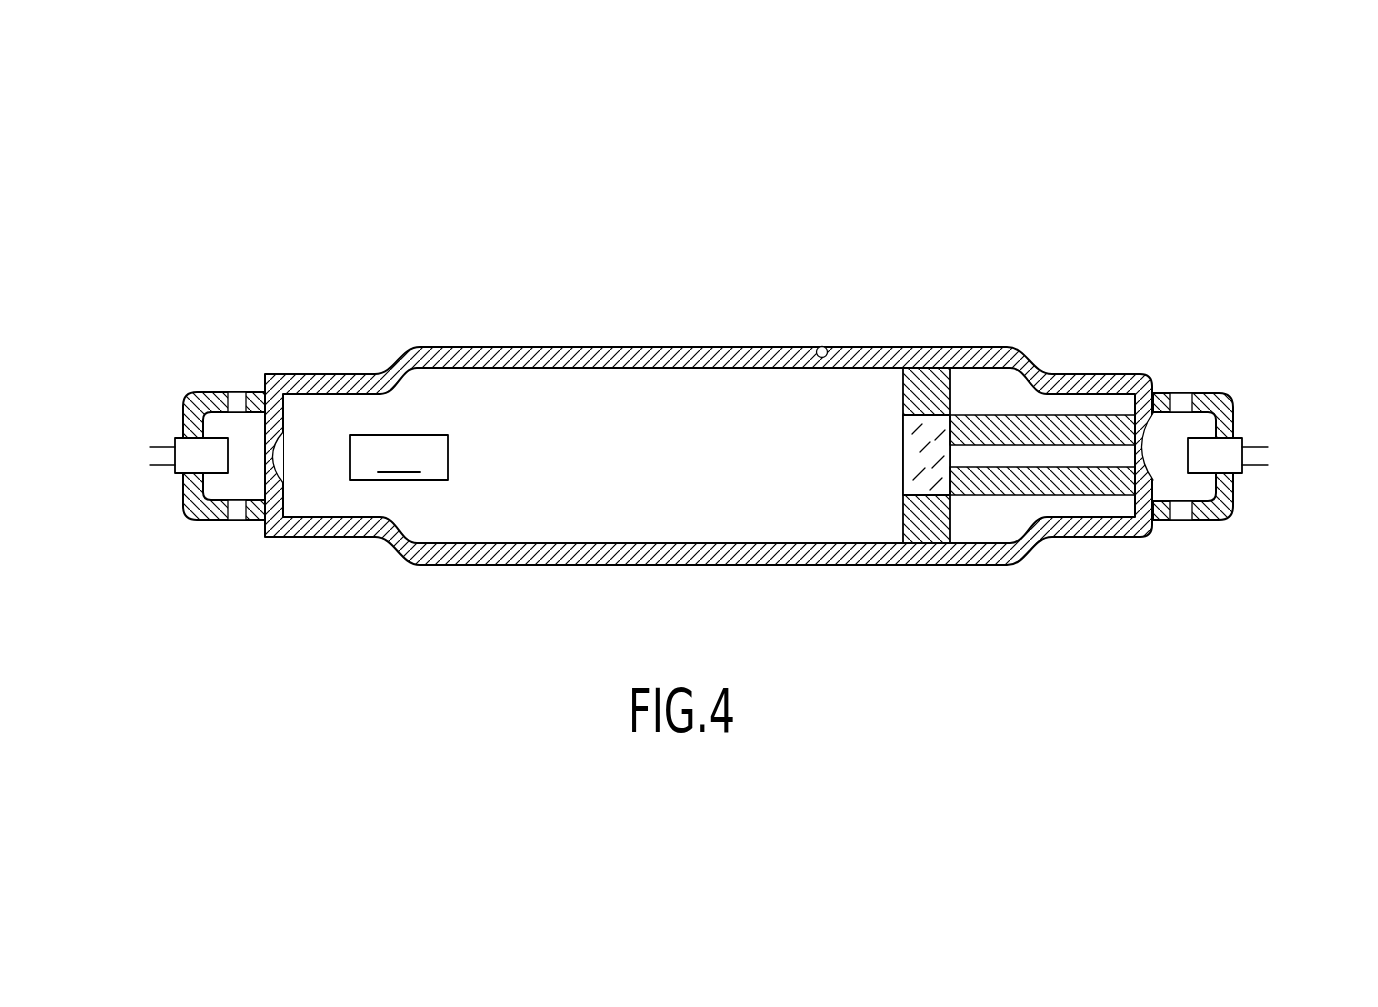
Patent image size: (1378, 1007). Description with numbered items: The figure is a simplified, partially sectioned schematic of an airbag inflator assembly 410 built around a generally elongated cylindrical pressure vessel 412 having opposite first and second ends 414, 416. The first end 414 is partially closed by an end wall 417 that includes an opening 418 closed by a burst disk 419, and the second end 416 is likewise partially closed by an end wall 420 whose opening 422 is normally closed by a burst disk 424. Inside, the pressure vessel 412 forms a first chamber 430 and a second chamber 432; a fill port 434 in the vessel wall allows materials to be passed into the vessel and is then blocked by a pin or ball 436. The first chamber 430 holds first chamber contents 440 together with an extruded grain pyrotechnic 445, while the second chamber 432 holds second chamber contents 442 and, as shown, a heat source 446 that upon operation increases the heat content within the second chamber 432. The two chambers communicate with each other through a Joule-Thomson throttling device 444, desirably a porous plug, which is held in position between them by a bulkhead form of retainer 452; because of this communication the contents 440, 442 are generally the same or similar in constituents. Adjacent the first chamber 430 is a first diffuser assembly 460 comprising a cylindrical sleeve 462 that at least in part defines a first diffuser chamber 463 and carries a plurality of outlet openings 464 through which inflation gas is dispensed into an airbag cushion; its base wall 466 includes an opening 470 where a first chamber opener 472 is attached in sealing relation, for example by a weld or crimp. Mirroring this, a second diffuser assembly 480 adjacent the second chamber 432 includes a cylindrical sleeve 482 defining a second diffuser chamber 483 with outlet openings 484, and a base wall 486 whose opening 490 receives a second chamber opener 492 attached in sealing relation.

The inflator assembly 410 is at (850, 226).
The pressure vessel 412 is at (630, 345).
The first end 414 is at (1115, 303).
The second end 416 is at (275, 348).
The end wall 417 is at (1122, 537).
The opening 418 is at (1149, 395).
The burst disk 419 is at (1150, 448).
The end wall 420 is at (272, 523).
The opening 422 is at (302, 385).
The burst disk 424 is at (283, 442).
The first chamber 430 is at (1033, 532).
The second chamber 432 is at (575, 545).
The fill port 434 is at (811, 348).
The pin or ball 436 is at (826, 348).
The first chamber contents 440 is at (988, 523).
The second chamber contents 442 is at (710, 505).
The Joule-Thomson throttling device 444 is at (925, 470).
The extruded grain pyrotechnic 445 is at (1003, 418).
The heat source 446 is at (399, 457).
The retainer 452 is at (935, 528).
The first diffuser assembly 460 is at (1260, 303).
The cylindrical sleeve 462 is at (1158, 525).
The first diffuser chamber 463 is at (1235, 417).
The outlet openings 464 is at (1182, 513).
The base wall 466 is at (1232, 510).
The opening 470 is at (1227, 457).
The first chamber opener 472 is at (1250, 463).
The second diffuser assembly 480 is at (148, 353).
The cylindrical sleeve 482 is at (248, 392).
The second diffuser chamber 483 is at (205, 397).
The outlet openings 484 is at (240, 512).
The base wall 486 is at (188, 506).
The opening 490 is at (193, 503).
The second chamber opener 492 is at (195, 450).